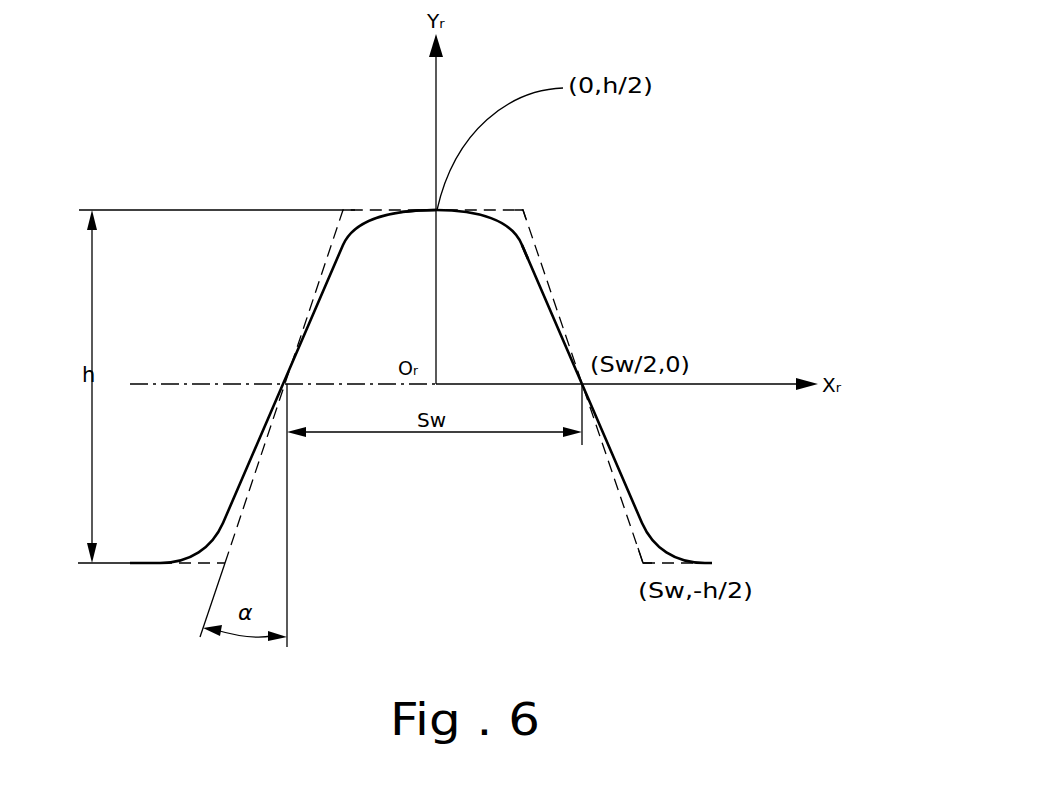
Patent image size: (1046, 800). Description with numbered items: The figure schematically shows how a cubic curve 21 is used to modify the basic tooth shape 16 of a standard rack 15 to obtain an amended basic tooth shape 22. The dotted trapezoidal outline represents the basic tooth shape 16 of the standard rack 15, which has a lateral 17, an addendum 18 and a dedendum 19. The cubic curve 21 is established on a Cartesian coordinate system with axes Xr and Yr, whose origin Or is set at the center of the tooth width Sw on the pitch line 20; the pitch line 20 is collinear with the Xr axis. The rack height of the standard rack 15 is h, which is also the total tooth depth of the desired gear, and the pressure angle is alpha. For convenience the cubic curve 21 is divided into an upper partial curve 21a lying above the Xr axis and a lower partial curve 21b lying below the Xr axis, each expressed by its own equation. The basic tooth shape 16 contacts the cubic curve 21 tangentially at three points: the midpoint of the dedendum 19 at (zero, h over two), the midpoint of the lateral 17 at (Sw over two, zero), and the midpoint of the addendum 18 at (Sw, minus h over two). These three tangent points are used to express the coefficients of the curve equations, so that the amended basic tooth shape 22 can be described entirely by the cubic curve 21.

The standard rack 15 is at (429, 338).
The basic tooth shape 16 is at (540, 209).
The lateral 17 is at (553, 300).
The addendum 18 is at (652, 573).
The dedendum 19 is at (403, 210).
The pitch line 20 is at (152, 384).
The cubic curve 21 is at (522, 270).
The upper partial curve 21a is at (540, 260).
The lower partial curve 21b is at (633, 507).
The amended basic tooth shape 22 is at (370, 225).